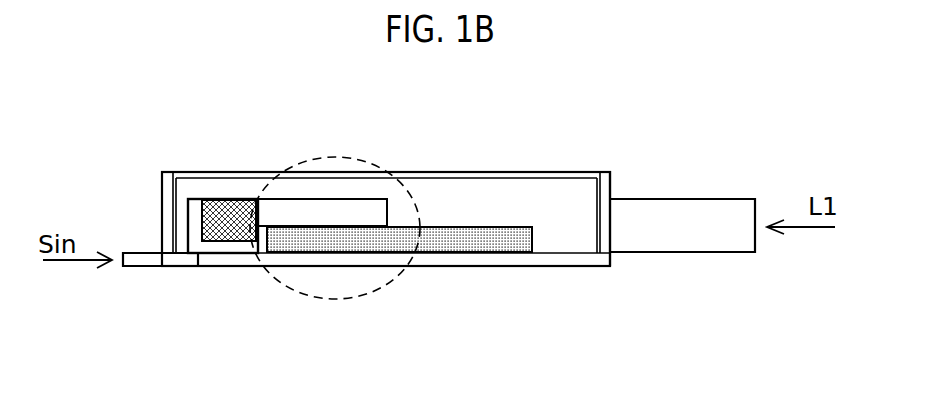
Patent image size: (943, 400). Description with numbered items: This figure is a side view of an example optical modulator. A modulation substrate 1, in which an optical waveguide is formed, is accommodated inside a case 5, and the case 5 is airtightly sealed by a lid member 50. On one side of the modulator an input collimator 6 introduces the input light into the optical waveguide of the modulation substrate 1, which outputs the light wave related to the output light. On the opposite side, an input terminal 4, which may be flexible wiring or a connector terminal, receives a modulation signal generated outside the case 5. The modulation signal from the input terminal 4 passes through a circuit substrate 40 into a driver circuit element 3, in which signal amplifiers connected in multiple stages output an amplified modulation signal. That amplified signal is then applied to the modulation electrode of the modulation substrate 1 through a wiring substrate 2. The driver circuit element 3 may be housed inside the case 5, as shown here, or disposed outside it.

The modulation substrate 1 is at (512, 238).
The wiring substrate 2 is at (288, 210).
The driver circuit element 3 is at (218, 213).
The input terminal 4 is at (152, 260).
The case 5 is at (605, 172).
The input collimator 6 is at (703, 217).
The circuit substrate 40 is at (210, 245).
The lid member 50 is at (490, 172).